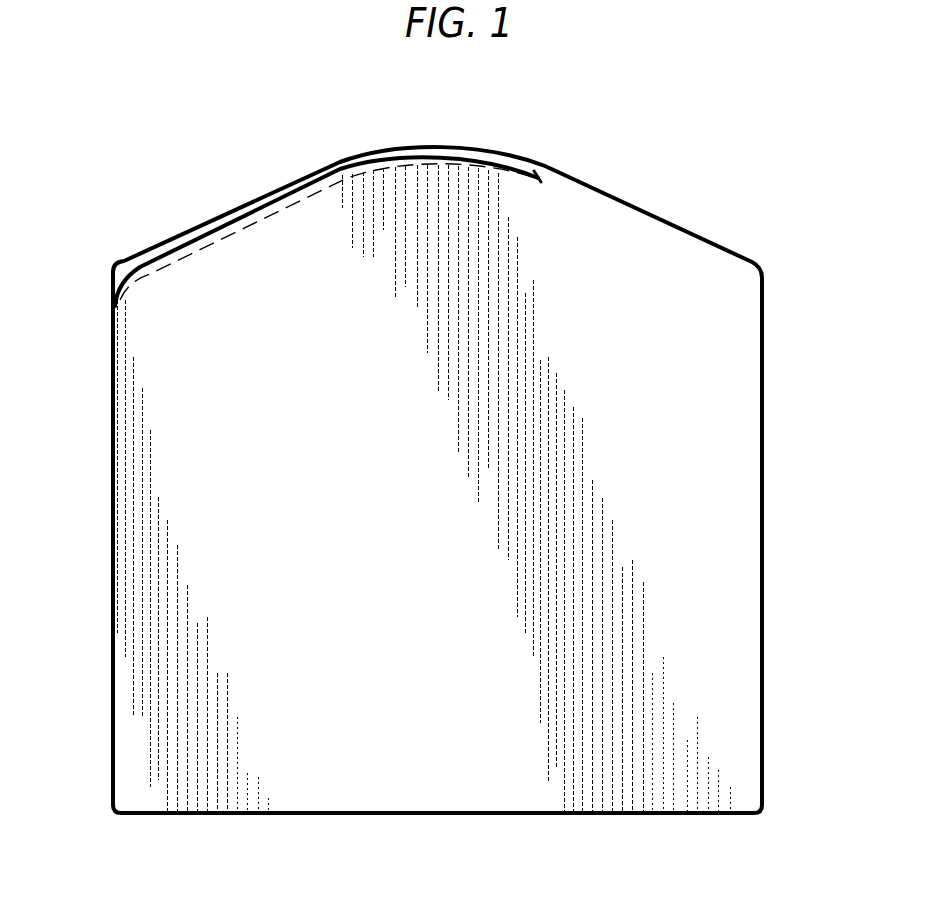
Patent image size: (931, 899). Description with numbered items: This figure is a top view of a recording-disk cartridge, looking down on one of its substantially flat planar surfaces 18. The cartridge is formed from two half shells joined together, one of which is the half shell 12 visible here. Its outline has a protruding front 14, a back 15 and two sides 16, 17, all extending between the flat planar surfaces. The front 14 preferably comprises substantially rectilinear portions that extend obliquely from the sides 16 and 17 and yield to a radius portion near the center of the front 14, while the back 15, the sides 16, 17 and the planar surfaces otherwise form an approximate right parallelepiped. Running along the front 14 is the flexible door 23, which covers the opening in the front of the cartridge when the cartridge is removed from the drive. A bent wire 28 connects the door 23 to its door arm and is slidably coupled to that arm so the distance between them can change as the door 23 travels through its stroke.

The half shell 12 is at (436, 504).
The front 14 is at (568, 195).
The back 15 is at (147, 815).
The side 16 is at (113, 407).
The side 17 is at (763, 572).
The planar surface 18 is at (663, 441).
The flexible door 23 is at (137, 270).
The bent wire 28 is at (148, 268).